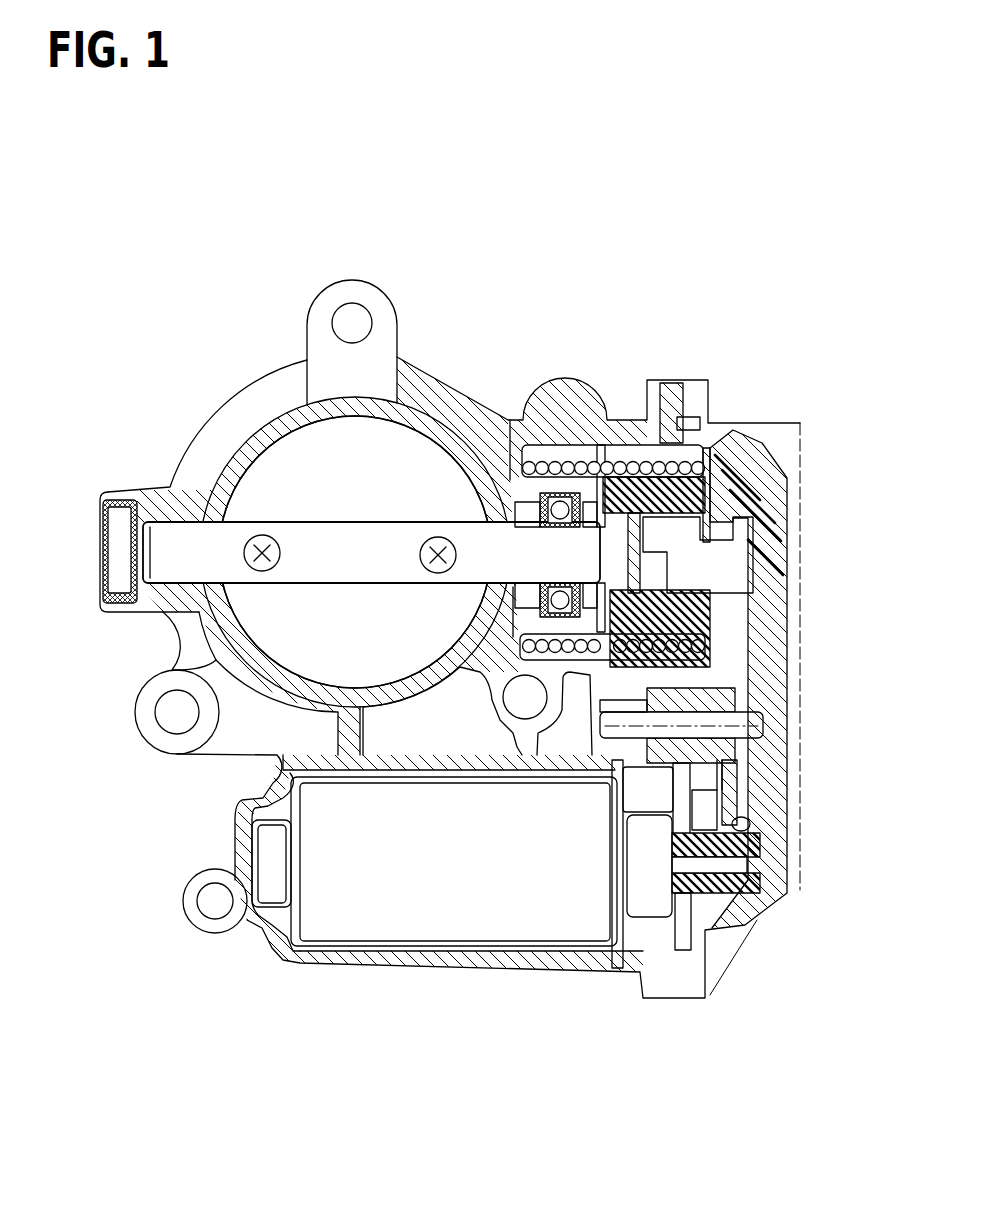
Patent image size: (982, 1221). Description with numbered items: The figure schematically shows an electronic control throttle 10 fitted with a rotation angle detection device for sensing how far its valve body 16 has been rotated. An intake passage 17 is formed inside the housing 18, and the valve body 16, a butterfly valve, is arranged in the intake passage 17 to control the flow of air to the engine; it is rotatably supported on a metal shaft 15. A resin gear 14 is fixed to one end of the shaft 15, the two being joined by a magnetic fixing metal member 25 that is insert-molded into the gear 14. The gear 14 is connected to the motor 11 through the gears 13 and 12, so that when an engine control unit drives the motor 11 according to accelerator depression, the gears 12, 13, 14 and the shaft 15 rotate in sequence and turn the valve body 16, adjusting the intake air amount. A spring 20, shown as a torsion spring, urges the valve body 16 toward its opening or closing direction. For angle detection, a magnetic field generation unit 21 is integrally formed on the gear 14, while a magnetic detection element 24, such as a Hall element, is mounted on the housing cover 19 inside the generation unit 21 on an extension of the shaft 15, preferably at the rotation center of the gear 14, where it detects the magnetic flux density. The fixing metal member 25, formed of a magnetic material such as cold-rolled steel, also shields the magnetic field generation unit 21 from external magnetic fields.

The electronic control throttle 10 is at (153, 333).
The motor 11 is at (445, 905).
The gear 12 is at (743, 847).
The gear 13 is at (747, 823).
The gear 14 is at (710, 688).
The shaft 15 is at (383, 552).
The valve body 16 is at (267, 487).
The intake passage 17 is at (380, 487).
The housing 18 is at (254, 372).
The housing cover 19 is at (790, 560).
The spring 20 is at (560, 467).
The magnetic field generation unit 21 is at (670, 503).
The magnetic detection element 24 is at (710, 487).
The fixing metal member 25 is at (655, 583).